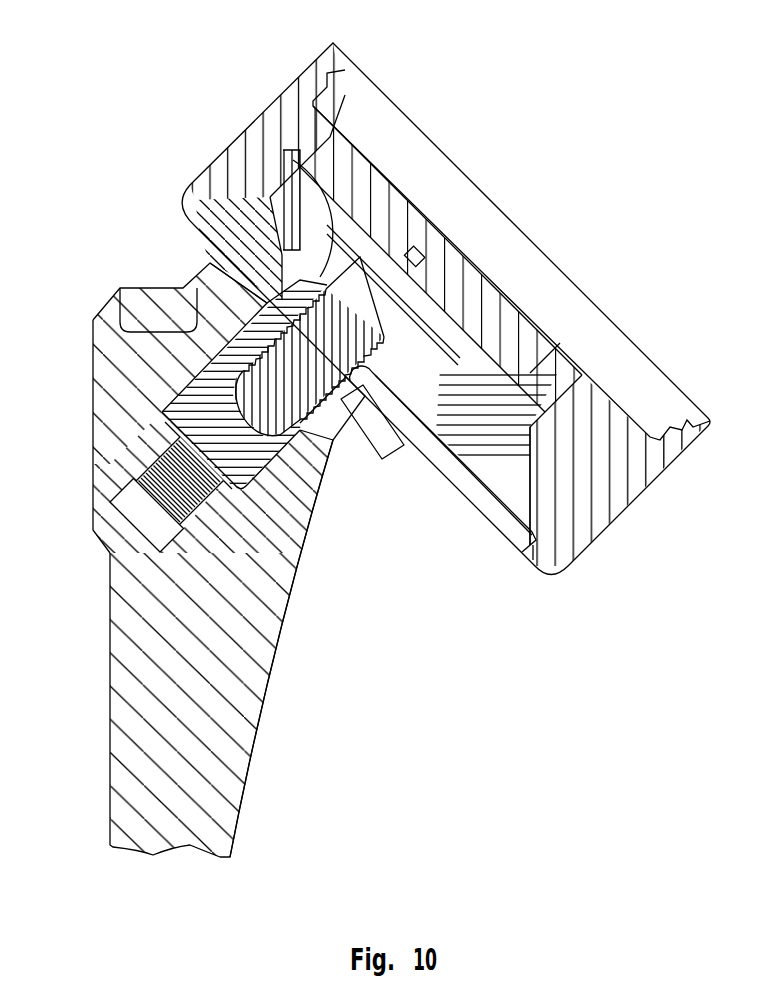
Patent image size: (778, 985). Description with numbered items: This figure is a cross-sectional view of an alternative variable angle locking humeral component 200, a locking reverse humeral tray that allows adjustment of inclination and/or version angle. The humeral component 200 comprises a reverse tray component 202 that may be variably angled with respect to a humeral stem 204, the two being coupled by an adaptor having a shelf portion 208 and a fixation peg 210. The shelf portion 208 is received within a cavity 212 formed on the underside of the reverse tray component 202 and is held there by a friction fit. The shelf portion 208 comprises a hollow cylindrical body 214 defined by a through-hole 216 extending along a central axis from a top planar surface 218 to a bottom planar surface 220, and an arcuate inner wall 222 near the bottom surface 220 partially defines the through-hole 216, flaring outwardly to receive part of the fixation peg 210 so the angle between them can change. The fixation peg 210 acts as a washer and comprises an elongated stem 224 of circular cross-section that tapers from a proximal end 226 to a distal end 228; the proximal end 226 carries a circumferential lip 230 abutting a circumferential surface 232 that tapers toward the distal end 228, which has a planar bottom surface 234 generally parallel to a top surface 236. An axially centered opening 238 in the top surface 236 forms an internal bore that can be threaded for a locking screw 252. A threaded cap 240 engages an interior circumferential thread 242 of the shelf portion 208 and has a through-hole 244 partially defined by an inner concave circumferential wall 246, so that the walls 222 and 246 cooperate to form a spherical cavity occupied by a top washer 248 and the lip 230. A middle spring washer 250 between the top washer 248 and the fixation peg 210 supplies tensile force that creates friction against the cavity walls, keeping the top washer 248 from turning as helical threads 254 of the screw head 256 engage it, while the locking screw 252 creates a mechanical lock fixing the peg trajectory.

The variable angle locking humeral component 200 is at (104, 104).
The reverse tray component 202 is at (608, 542).
The humeral stem 204 is at (247, 708).
The shelf portion 208 is at (487, 457).
The fixation peg 210 is at (250, 483).
The cavity 212 is at (478, 330).
The hollow cylindrical body 214 is at (523, 462).
The through-hole 216 is at (433, 247).
The top planar surface 218 is at (517, 360).
The bottom planar surface 220 is at (418, 445).
The arcuate inner wall 222 is at (290, 215).
The elongated stem 224 is at (200, 372).
The proximal end 226 is at (378, 185).
The distal end 228 is at (165, 470).
The circumferential lip 230 is at (300, 262).
The circumferential surface 232 is at (240, 493).
The bottom surface 234 is at (230, 520).
The top surface 236 is at (305, 240).
The axially centered opening 238 is at (250, 407).
The threaded cap 240 is at (520, 385).
The interior circumferential thread 242 is at (472, 290).
The through-hole 244 is at (413, 200).
The inner concave circumferential wall 246 is at (435, 300).
The top washer 248 is at (290, 185).
The middle spring washer 250 is at (385, 410).
The locking screw 252 is at (180, 288).
The helical threads 254 is at (507, 375).
The screw head 256 is at (285, 283).